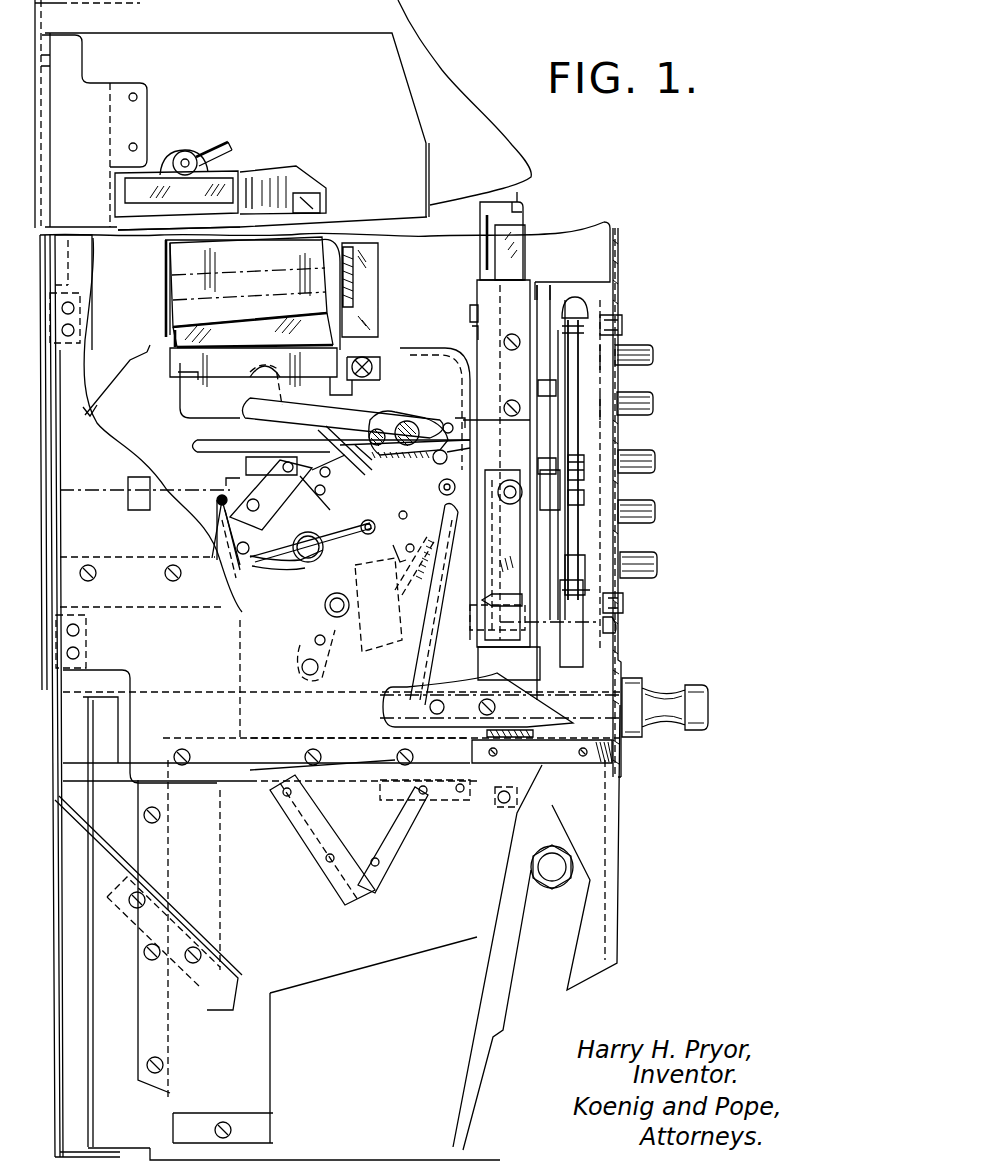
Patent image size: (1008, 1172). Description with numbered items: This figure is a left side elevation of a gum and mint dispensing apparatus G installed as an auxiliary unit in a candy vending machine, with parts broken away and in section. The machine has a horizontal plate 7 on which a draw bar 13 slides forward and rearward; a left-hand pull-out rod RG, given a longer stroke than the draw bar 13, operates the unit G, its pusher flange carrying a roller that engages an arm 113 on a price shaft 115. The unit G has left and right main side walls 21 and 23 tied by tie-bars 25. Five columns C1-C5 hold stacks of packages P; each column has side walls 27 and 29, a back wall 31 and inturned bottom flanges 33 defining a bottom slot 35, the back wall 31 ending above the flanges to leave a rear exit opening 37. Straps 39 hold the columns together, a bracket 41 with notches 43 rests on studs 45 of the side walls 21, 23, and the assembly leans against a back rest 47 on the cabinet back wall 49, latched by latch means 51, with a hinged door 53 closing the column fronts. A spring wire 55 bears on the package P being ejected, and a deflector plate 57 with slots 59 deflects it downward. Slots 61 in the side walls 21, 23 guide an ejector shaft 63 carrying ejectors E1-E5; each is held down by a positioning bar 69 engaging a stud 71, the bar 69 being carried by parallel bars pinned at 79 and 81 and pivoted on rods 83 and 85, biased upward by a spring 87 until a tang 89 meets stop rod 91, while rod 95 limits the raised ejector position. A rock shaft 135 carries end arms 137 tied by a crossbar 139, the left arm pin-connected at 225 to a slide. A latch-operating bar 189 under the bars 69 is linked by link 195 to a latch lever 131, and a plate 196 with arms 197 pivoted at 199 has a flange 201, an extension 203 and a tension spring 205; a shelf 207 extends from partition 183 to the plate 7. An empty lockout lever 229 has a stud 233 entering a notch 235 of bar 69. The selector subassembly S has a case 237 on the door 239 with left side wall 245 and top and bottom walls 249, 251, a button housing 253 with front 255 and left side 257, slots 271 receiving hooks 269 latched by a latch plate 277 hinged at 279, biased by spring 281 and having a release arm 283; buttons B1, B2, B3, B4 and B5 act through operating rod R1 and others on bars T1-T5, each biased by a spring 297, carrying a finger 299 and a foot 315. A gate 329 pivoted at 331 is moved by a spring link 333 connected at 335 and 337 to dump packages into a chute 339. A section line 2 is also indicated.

The section line 2- 2 is at (470, 265).
The horizontal plate 7 is at (600, 754).
The draw bar 13 is at (542, 753).
The left main side wall 21 is at (92, 300).
The right main side wall 23 is at (245, 233).
The tie-bar 25 is at (58, 308).
The column side wall 27 is at (256, 172).
The column side wall 29 is at (248, 170).
The back wall 31 is at (118, 227).
The inturned bottom flanges 33 is at (292, 400).
The front-to-rear bottom slot 35 is at (222, 410).
The rear exit opening 37 is at (182, 382).
The strap 39 is at (125, 197).
The bracket 41 is at (376, 348).
The notch 43 is at (388, 361).
The stud 45 is at (365, 380).
The back rest 47 is at (93, 95).
The back wall of the vending machine cabinet 49 is at (44, 142).
The latch means 51 is at (190, 152).
The hinged door 53 is at (320, 198).
The spring wire 55 is at (167, 286).
The deflector plate 57 is at (96, 407).
The front-to-rear slot 59 is at (126, 366).
The front-to-rear slot 61 is at (192, 445).
The ejector shaft 63 is at (410, 420).
The ejector positioning bar 69 is at (250, 470).
The stud 71 is at (445, 418).
The pin connection 79 is at (448, 452).
The pin connection 81 is at (271, 464).
The forward rod 83 is at (411, 521).
The rearward rod 85 is at (250, 500).
The spring 87 is at (368, 520).
The tang 89 is at (392, 554).
The stop rod 91 is at (408, 539).
The rod 95 is at (401, 426).
The arm 113 is at (512, 798).
The price shaft 115 is at (540, 848).
The latch lever 131 is at (490, 680).
The rock shaft 135 is at (324, 604).
The end arm 137 is at (368, 580).
The crossbar 139 is at (301, 667).
The partition 183 is at (250, 516).
The latch-operating bar 189 is at (458, 480).
The link 195 is at (424, 588).
The plate 196 is at (507, 567).
The upwardly extending arm 197 is at (510, 500).
The pivot 199 is at (505, 555).
The forwardly extending flange 201 is at (476, 620).
The rearwardly directed extension 203 is at (440, 518).
The tension spring 205 is at (428, 560).
The horizontal shelf 207 is at (327, 740).
The pin connection 225 is at (315, 638).
The empty lockout lever 229 is at (255, 393).
The stud 233 is at (318, 494).
The notch 235 is at (318, 452).
The sheet metal case 237 is at (608, 282).
The door 239 is at (620, 632).
The left side wall of case 245 is at (605, 385).
The top wall of case 249 is at (548, 280).
The bottom wall of case 251 is at (618, 642).
The button housing 253 is at (606, 325).
The front of button housing 255 is at (620, 293).
The left side of button housing 257 is at (605, 430).
The hook 269 is at (540, 386).
The horizontal slot 271 is at (528, 445).
The latch plate 277 is at (560, 344).
The hinge 279 is at (583, 332).
The spring 281 is at (578, 462).
The angled release arm 283 is at (578, 630).
The spring 297 is at (524, 212).
The finger 299 is at (465, 420).
The foot 315 is at (506, 597).
The gate 329 is at (213, 548).
The gate pivot 331 is at (219, 502).
The spring link 333 is at (268, 562).
The connection 335 is at (368, 534).
The connection 337 is at (250, 548).
The chute 339 is at (80, 812).
The push button B1 is at (653, 346).
The push button B2 is at (654, 404).
The push button B3 is at (656, 462).
The push button B4 is at (656, 511).
The push button B5 is at (658, 566).
The magazines or columns C1-C5 is at (280, 180).
The ejectors E1-E5 is at (377, 426).
The gum and mint dispensing apparatus G is at (158, 272).
The package P is at (168, 304).
The operating rod R1 is at (470, 308).
The pull-out rod RG is at (575, 702).
The selector subassembly S is at (566, 280).
The vertically slidable bars T1-T5 is at (527, 248).